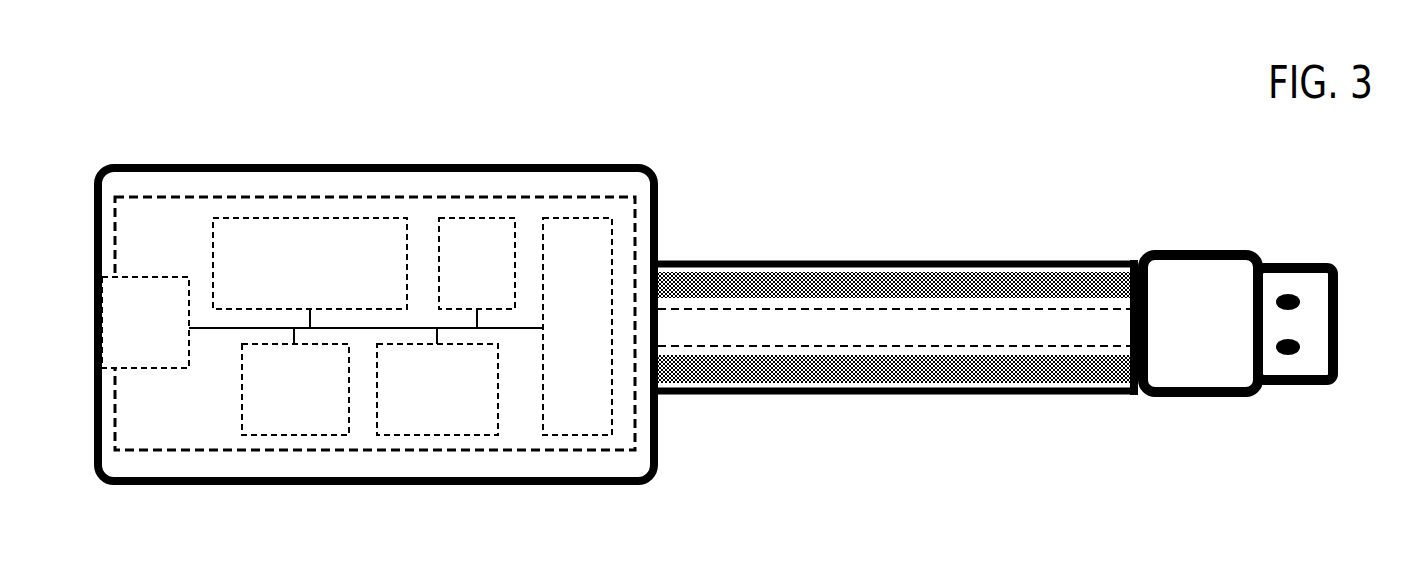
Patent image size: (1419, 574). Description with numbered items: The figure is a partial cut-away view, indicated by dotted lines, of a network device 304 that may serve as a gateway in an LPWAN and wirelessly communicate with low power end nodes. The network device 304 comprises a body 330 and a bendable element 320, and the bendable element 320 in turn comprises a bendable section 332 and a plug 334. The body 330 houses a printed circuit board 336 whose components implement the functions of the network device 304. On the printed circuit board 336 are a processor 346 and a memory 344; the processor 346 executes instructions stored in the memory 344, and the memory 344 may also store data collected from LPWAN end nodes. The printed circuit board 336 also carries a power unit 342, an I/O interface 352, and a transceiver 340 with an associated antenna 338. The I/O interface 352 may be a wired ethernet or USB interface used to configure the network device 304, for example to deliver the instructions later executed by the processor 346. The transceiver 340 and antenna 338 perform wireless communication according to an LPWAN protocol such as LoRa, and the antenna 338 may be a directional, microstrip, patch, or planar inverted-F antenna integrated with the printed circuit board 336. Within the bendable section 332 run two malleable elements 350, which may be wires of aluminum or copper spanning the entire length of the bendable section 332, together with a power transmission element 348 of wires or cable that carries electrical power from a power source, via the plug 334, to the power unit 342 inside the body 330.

The network device 304 is at (197, 95).
The bendable element 320 is at (1037, 178).
The body 330 is at (418, 485).
The bendable section 332 is at (1122, 400).
The plug 334 is at (1183, 403).
The printed circuit board 336 is at (590, 197).
The antenna 338 is at (310, 263).
The transceiver 340 is at (477, 263).
The power unit 342 is at (577, 326).
The memory 344 is at (295, 389).
The processor 346 is at (437, 389).
The power transmission element 348 is at (842, 330).
The malleable elements 350 is at (914, 283).
The I/O interface 352 is at (145, 322).